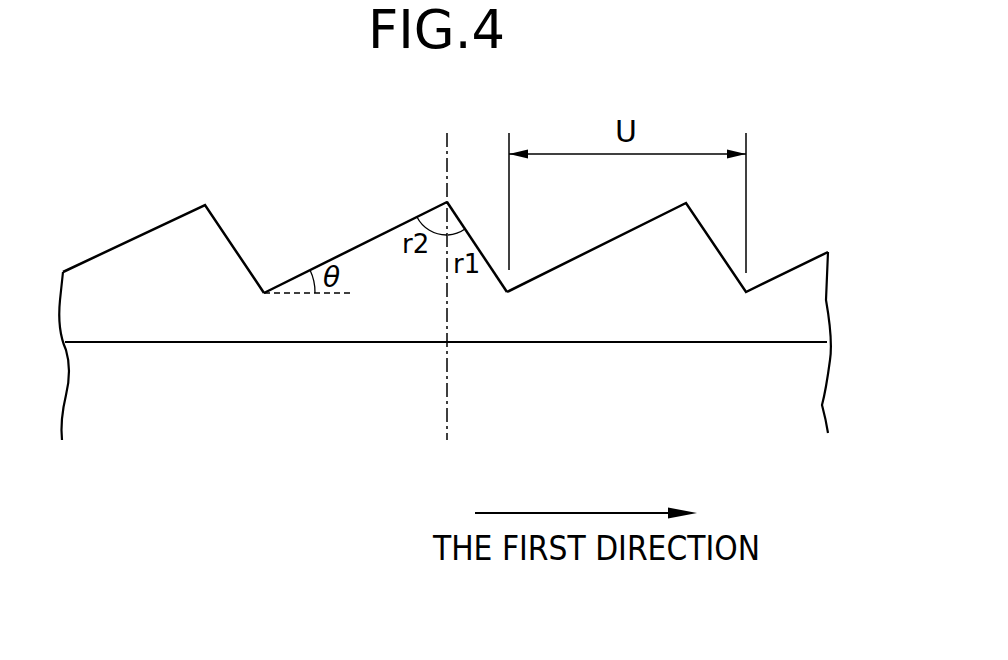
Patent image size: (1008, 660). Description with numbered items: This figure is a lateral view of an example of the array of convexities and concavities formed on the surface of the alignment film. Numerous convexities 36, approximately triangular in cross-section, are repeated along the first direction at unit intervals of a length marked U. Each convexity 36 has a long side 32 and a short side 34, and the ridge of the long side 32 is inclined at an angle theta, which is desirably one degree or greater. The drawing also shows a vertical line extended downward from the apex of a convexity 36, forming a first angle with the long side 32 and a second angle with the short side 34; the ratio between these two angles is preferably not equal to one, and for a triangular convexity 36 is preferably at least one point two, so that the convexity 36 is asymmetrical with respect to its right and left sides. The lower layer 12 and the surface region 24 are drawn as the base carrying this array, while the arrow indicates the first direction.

The substrate 12 is at (800, 395).
The grooved layer 24 is at (808, 303).
The long side 32 is at (355, 245).
The short side 34 is at (477, 237).
The convexity 36 is at (140, 253).